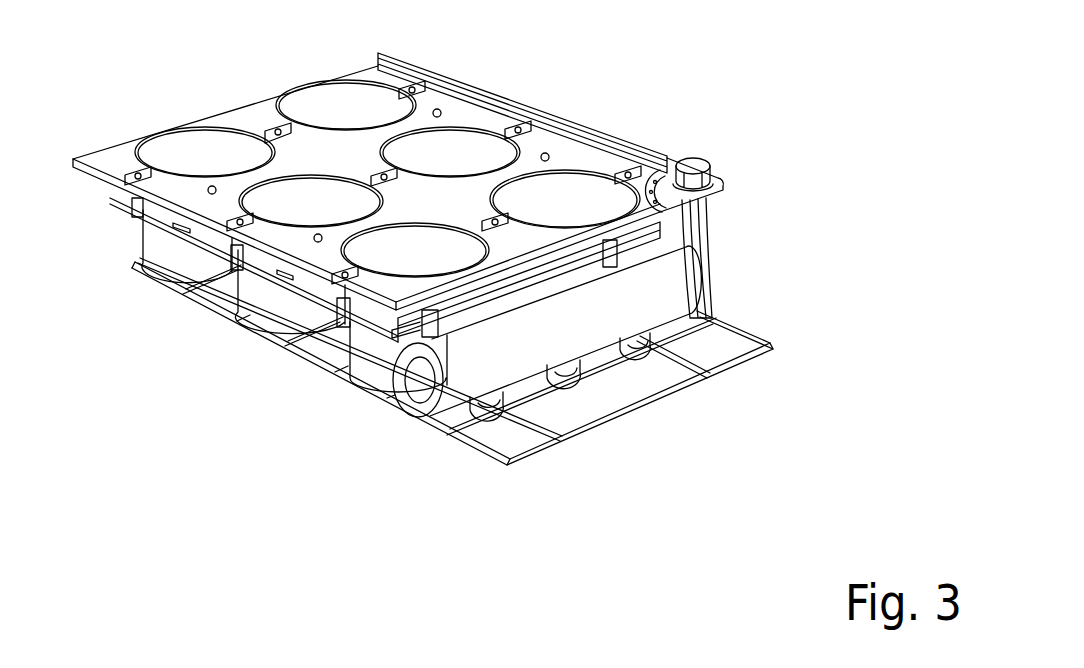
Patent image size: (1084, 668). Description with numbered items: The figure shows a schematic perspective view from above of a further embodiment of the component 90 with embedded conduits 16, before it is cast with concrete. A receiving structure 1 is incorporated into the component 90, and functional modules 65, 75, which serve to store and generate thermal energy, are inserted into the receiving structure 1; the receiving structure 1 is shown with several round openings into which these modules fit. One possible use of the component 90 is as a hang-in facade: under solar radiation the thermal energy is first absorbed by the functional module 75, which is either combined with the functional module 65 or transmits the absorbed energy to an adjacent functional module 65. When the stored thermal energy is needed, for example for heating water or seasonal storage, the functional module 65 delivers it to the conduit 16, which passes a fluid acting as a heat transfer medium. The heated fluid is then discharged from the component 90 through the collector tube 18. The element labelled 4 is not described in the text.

The receiving structure 1 is at (262, 115).
The receptacle cup 4 is at (143, 246).
The conduit 16 is at (470, 408).
The collector tube 18 is at (682, 283).
The functional module 65 is at (577, 187).
The functional module 75 is at (565, 199).
The component 90 is at (577, 107).